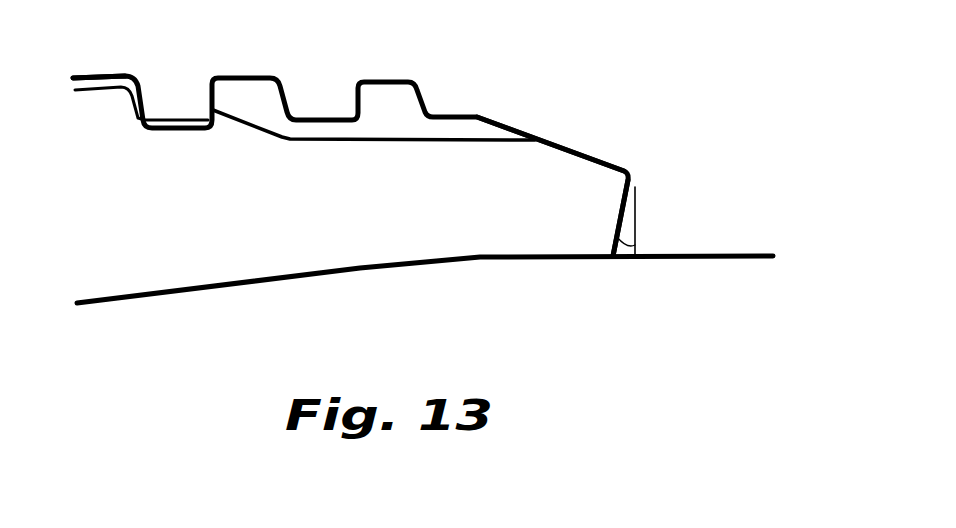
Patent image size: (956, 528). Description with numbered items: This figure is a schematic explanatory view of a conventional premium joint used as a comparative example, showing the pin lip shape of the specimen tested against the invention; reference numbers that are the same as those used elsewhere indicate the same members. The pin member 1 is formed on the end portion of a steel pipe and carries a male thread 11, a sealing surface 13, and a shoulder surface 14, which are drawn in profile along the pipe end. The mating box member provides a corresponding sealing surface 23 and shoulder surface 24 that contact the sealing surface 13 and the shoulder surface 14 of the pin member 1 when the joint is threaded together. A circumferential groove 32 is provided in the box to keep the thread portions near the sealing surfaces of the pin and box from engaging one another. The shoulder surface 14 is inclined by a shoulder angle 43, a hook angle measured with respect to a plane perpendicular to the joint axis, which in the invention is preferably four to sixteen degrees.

The pin member 1 is at (255, 235).
The male thread 11 is at (107, 108).
The sealing surface 13 is at (563, 157).
The shoulder surface 14 is at (612, 227).
The sealing surface 23 is at (578, 145).
The shoulder surface 24 is at (637, 195).
The circumferential groove 32 is at (447, 130).
The shoulder angle 43 is at (644, 238).